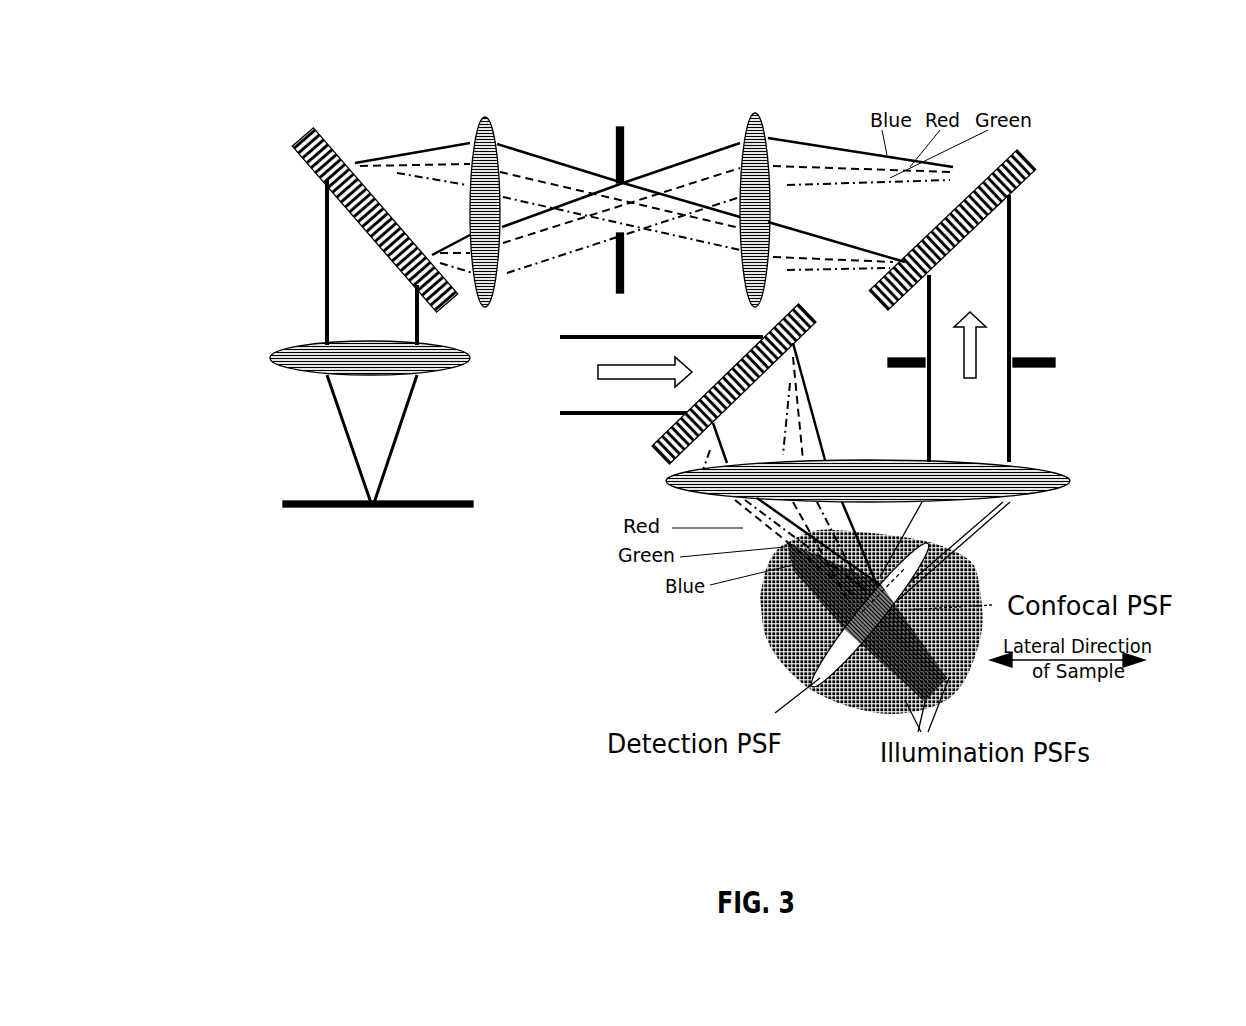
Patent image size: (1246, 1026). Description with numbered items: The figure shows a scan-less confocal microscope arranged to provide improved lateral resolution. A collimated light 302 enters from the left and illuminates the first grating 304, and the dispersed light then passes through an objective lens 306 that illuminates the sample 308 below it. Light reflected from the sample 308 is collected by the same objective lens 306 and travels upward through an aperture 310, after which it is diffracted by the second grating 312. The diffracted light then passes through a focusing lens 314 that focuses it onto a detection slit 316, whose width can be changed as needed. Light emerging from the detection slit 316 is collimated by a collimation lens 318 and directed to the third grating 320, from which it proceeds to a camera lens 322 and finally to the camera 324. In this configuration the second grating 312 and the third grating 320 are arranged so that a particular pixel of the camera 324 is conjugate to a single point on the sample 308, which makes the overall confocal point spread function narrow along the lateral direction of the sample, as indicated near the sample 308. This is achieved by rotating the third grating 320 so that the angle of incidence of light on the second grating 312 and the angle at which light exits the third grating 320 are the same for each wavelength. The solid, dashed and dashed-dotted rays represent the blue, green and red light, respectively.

The collimated light 302 is at (658, 375).
The grating 1 304 is at (657, 452).
The objective lens 306 is at (1047, 473).
The sample 308 is at (763, 613).
The aperture 310 is at (1057, 358).
The grating 2 312 is at (1033, 158).
The focusing lens 314 is at (753, 127).
The detection slit 316 is at (617, 105).
The collimation lens 318 is at (482, 127).
The grating 3 320 is at (300, 137).
The camera lens 322 is at (300, 360).
The camera 324 is at (287, 502).